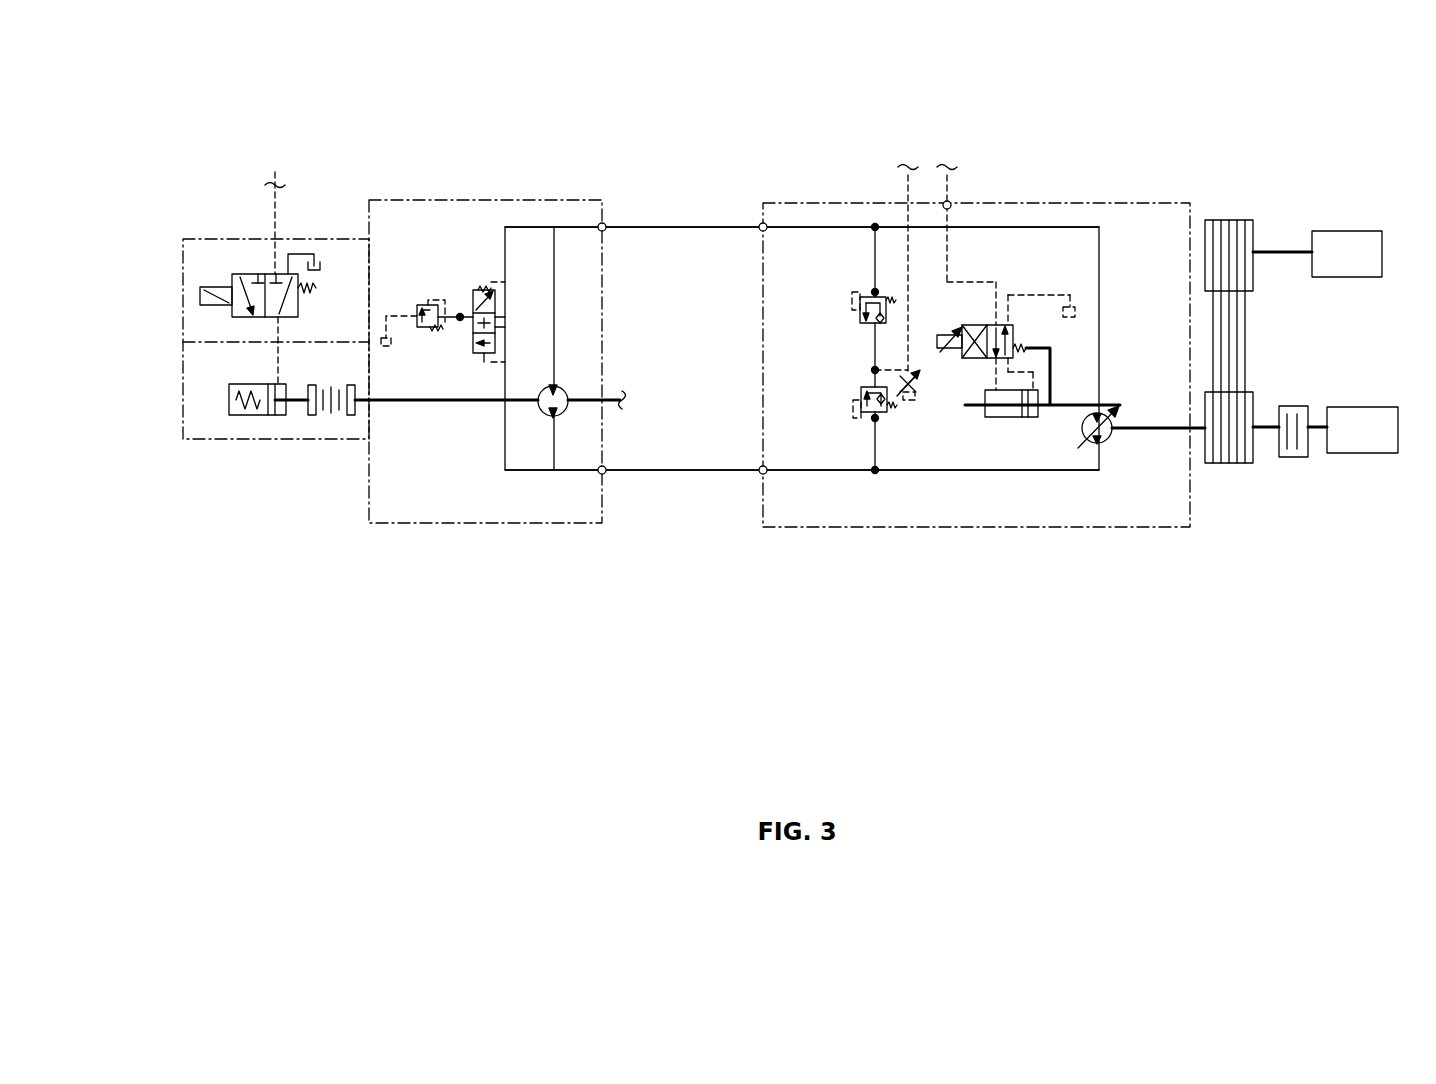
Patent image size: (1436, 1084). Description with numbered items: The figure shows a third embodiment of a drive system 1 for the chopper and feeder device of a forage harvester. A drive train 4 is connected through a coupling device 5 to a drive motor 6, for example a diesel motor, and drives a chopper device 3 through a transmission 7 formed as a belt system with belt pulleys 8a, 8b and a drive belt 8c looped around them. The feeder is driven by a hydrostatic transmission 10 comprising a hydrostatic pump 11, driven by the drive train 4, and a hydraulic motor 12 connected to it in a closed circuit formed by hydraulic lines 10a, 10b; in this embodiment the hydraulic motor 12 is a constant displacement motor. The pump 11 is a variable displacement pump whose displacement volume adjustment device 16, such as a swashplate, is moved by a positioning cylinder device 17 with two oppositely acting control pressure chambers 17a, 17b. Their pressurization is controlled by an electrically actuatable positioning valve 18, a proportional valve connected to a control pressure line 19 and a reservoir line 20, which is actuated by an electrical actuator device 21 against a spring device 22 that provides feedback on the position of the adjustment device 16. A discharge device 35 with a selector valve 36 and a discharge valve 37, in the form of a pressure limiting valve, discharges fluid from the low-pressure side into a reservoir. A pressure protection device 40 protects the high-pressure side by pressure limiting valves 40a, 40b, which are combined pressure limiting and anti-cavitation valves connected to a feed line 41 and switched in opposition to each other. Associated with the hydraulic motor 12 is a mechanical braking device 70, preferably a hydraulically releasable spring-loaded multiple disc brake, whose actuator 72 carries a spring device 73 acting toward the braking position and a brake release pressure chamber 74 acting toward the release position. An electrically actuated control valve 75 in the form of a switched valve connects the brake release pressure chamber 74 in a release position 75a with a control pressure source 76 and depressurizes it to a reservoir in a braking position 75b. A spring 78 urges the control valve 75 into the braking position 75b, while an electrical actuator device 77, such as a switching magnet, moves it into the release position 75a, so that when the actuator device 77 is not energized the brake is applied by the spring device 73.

The drive system 1 is at (1178, 105).
The chopper device 3 is at (1346, 243).
The drive train 4 is at (1241, 474).
The coupling device 5 is at (1295, 460).
The drive motor 6 is at (1358, 455).
The transmission 7 is at (1238, 212).
The belt pulley 8a is at (1248, 395).
The belt pulley 8b is at (1250, 230).
The drive belt 8c is at (1240, 325).
The hydrostatic transmission 10 is at (737, 478).
The hydraulic line 10a is at (686, 226).
The hydraulic line 10b is at (693, 472).
The hydrostatic pump 11 is at (1110, 442).
The hydraulic motor 12 is at (558, 384).
The displacement volume adjustment device 16 is at (1112, 416).
The positioning cylinder device 17 is at (988, 432).
The control pressure chamber 17a is at (1003, 420).
The control pressure chamber 17b is at (1027, 420).
The positioning valve 18 is at (976, 358).
The control pressure line 19 is at (948, 270).
The reservoir line 20 is at (1041, 287).
The electrical actuator device 21 is at (940, 342).
The spring device 22 is at (1028, 342).
The discharge device 35 is at (465, 276).
The selector valve 36 is at (486, 278).
The discharge valve 37 is at (421, 305).
The pressure protection device 40 is at (897, 452).
The pressure limiting valve 40a is at (860, 315).
The pressure limiting valve 40b is at (861, 395).
The feed line 41 is at (905, 190).
The mechanical braking device 70 is at (325, 425).
The actuator 72 is at (242, 416).
The spring device 73 is at (232, 391).
The brake release pressure chamber 74 is at (278, 416).
The control valve 75 is at (242, 280).
The release position 75a is at (250, 280).
The braking position 75b is at (284, 277).
The control pressure source 76 is at (280, 283).
The electrical actuator device 77 is at (208, 287).
The spring 78 is at (320, 289).